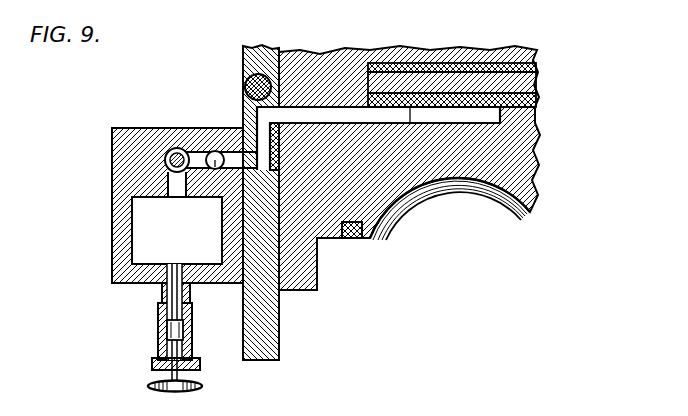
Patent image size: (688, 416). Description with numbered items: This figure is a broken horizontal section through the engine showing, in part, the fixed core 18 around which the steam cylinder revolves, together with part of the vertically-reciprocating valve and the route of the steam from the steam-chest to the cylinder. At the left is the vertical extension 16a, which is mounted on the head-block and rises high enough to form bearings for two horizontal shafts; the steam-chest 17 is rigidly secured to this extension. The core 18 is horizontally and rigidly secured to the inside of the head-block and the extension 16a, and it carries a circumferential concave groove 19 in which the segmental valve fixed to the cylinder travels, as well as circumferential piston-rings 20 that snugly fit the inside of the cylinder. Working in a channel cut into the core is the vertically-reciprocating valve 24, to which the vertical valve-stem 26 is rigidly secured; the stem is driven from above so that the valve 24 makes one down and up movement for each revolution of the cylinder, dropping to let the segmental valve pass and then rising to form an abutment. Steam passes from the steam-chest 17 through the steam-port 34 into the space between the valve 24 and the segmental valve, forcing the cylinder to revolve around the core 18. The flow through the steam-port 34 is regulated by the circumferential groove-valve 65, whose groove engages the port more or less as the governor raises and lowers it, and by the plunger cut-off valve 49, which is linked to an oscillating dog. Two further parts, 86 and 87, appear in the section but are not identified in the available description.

The vertical extension 16a is at (277, 336).
The steam-chest 17 is at (175, 233).
The core 18 is at (536, 158).
The circumferential concave groove 19 is at (445, 170).
The circumferential piston-rings 20 is at (352, 240).
The vertically-reciprocating valve 24 is at (517, 83).
The vertical valve-stem 26 is at (246, 82).
The steam-port 34 is at (321, 112).
The plunger cut-off valve 49 is at (213, 150).
The circumferential groove-valve 65 is at (168, 150).
The strip 86 is at (537, 66).
The gasket strip 87 is at (533, 98).